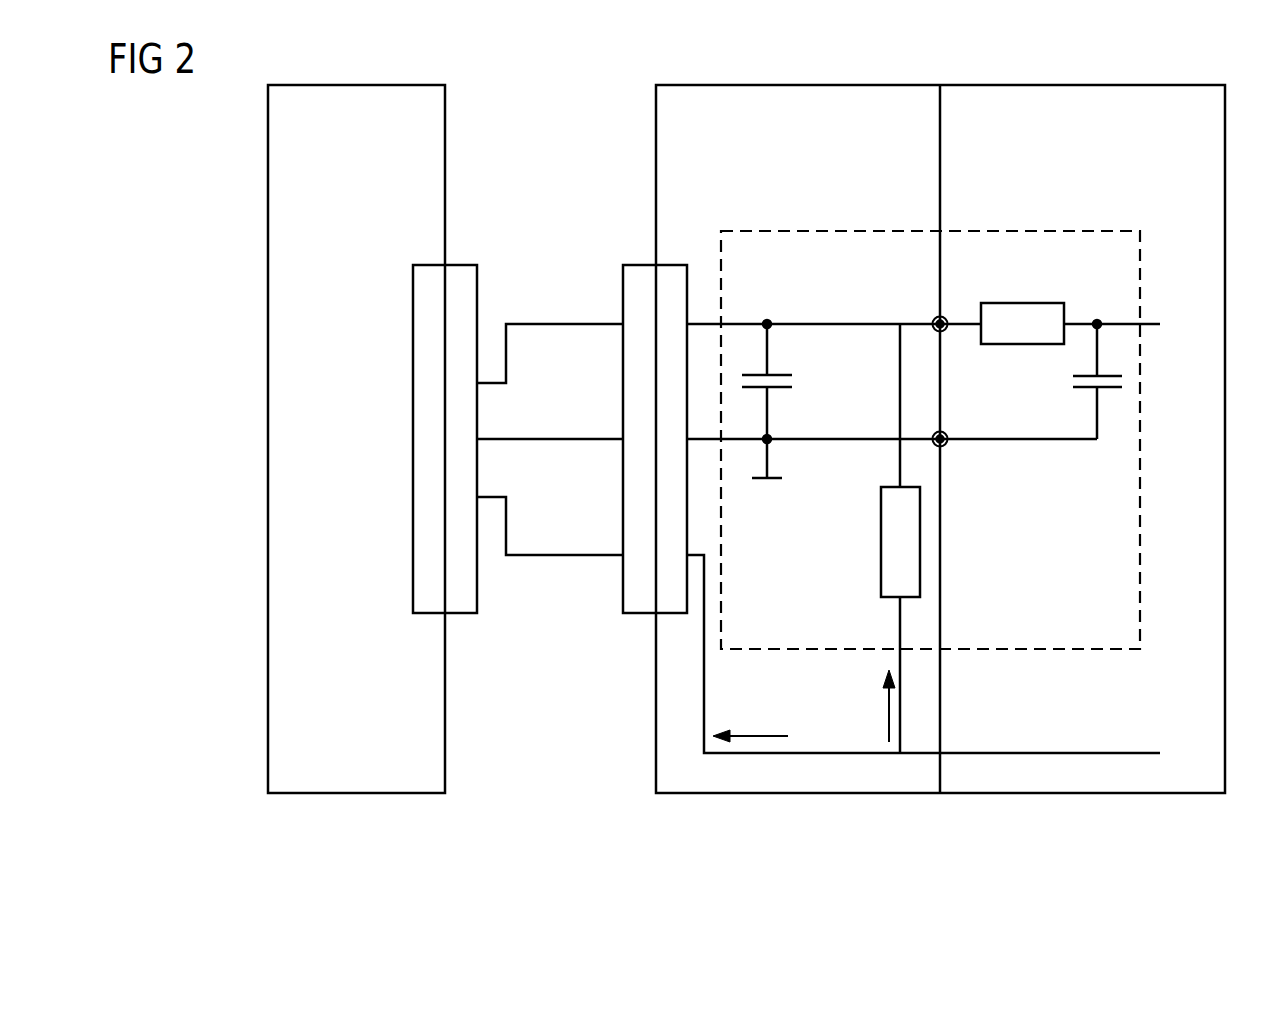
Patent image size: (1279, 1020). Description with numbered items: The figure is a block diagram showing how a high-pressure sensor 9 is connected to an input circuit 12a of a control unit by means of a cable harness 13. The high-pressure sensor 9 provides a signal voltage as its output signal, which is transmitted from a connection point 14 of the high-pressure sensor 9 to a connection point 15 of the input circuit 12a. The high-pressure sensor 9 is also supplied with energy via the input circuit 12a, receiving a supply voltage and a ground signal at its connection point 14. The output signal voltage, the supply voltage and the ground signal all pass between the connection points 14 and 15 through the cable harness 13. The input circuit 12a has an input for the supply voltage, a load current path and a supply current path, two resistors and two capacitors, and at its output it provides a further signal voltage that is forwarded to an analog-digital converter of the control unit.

The high-pressure sensor 9 is at (268, 823).
The cable harness 13 is at (448, 823).
The connection point of the high-pressure sensor 14 is at (455, 275).
The connection point of the input circuit 15 is at (640, 274).
The input circuit 12a is at (1225, 823).